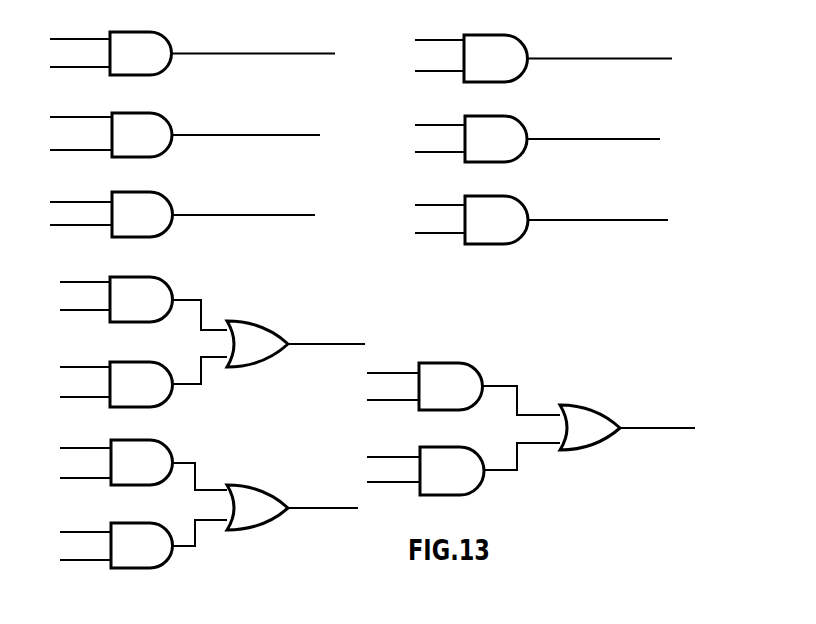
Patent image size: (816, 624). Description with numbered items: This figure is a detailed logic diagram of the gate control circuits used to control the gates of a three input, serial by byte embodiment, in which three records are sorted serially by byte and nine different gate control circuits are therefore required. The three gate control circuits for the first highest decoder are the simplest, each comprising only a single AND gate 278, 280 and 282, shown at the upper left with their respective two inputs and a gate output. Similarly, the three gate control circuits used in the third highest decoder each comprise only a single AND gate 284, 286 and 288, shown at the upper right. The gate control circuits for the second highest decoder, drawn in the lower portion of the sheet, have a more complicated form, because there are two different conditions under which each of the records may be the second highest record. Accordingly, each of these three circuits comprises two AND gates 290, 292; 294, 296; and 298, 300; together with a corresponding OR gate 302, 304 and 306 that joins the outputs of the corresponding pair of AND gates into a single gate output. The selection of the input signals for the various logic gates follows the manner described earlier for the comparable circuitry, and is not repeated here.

The AND gate 278 is at (139, 42).
The AND gate 280 is at (140, 123).
The AND gate 282 is at (140, 203).
The AND gate 284 is at (493, 48).
The AND gate 286 is at (495, 132).
The AND gate 288 is at (494, 214).
The AND gate 290 is at (140, 289).
The AND gate 292 is at (140, 380).
The AND gate 294 is at (140, 450).
The AND gate 296 is at (141, 540).
The AND gate 298 is at (452, 377).
The AND gate 300 is at (440, 463).
The OR gate 302 is at (298, 325).
The OR gate 304 is at (298, 490).
The OR gate 306 is at (580, 427).